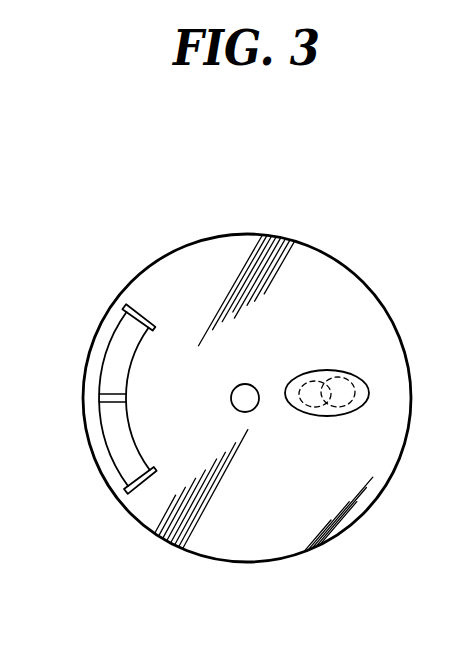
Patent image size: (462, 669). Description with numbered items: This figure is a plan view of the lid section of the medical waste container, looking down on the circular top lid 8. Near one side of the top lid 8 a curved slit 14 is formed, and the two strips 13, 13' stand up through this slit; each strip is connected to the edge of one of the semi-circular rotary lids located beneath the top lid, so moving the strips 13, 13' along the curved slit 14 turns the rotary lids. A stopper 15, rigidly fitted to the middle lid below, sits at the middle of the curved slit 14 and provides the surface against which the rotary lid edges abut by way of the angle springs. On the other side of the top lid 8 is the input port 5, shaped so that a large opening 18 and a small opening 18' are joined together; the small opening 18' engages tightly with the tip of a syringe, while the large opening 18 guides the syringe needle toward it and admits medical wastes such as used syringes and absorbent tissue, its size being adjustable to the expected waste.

The input port 5 is at (372, 328).
The circular top lid 8 is at (333, 505).
The strip 13 is at (152, 305).
The strip 13' is at (122, 511).
The curved slit 14 is at (115, 360).
The stopper 15 is at (107, 403).
The large opening 18 is at (360, 362).
The small opening 18' is at (356, 329).